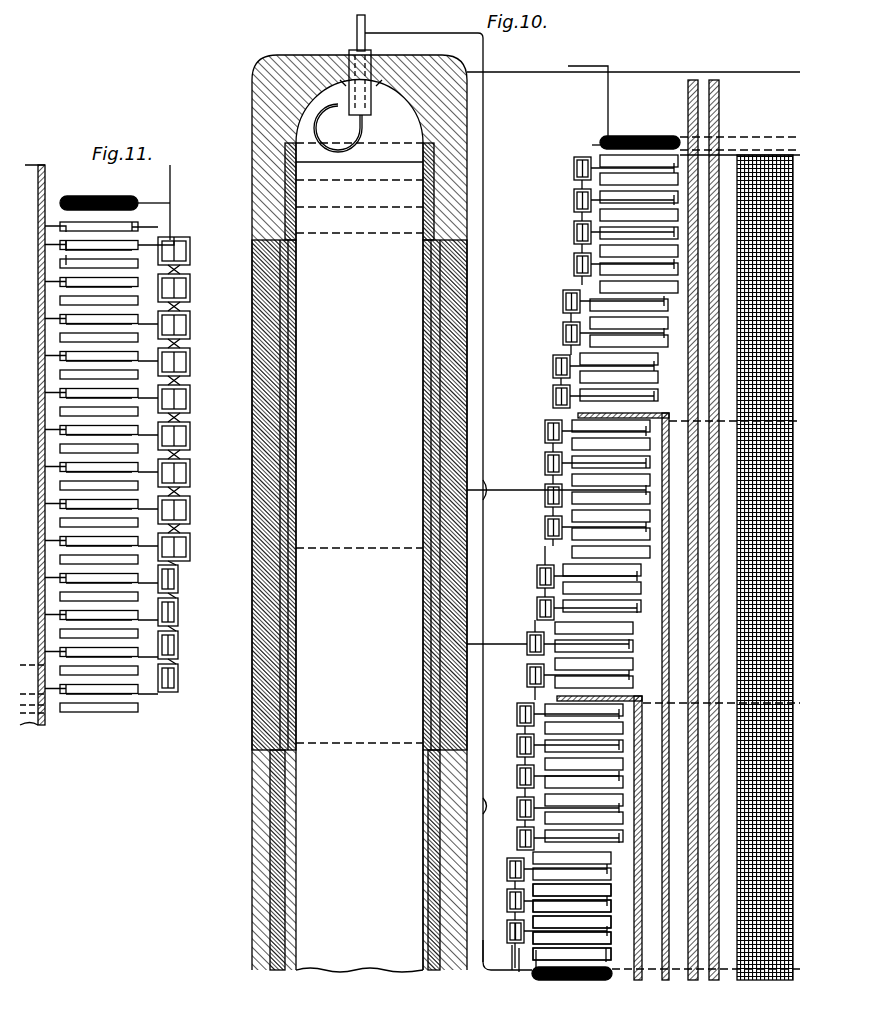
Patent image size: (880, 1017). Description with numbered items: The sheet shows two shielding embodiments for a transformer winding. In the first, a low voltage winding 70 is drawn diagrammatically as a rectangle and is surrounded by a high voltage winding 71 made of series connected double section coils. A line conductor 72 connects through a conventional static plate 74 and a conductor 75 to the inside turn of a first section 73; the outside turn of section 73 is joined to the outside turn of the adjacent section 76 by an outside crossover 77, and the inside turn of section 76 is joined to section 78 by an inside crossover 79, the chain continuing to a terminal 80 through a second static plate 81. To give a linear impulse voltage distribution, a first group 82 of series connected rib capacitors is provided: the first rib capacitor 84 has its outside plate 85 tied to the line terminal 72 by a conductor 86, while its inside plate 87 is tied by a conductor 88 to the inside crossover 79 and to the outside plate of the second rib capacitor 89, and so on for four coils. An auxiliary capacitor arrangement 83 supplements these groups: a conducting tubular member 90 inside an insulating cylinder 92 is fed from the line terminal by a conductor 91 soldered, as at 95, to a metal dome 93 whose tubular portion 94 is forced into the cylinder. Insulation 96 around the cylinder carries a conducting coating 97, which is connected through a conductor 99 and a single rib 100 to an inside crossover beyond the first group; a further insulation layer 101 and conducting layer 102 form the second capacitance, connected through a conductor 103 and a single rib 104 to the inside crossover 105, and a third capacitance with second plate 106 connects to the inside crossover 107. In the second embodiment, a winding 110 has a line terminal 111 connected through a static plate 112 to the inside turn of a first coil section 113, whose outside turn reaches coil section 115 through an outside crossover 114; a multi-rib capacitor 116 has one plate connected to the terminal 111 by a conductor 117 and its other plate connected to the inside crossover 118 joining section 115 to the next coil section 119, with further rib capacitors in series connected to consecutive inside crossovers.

In FIG. 10, the low voltage winding 70 is at (770, 462).
In FIG. 10, the high voltage winding 71 is at (620, 137).
In FIG. 10, the line conductor 72 is at (494, 975).
In FIG. 10, the first section 73 is at (607, 958).
In FIG. 10, the static plate 74 is at (594, 982).
In FIG. 10, the conductor 75 is at (606, 962).
In FIG. 10, the adjacent section 76 is at (607, 941).
In FIG. 10, the outside crossover 77 is at (536, 962).
In FIG. 10, the section 78 is at (609, 912).
In FIG. 10, the inside crossover 79 is at (611, 925).
In FIG. 10, the terminal 80 is at (608, 96).
In FIG. 10, the static plate 81 is at (655, 137).
In FIG. 10, the first group of rib capacitors 82 is at (507, 904).
In FIG. 10, the auxiliary capacitor arrangement 83 is at (362, 837).
In FIG. 10, the first rib capacitor 84 is at (507, 926).
In FIG. 10, the outside plate 85 is at (512, 938).
In FIG. 10, the conductor 86 is at (512, 963).
In FIG. 10, the inside plate 87 is at (518, 968).
In FIG. 10, the conductor 88 is at (565, 936).
In FIG. 10, the second rib capacitor 89 is at (508, 882).
In FIG. 10, the tubular member 90 is at (424, 936).
In FIG. 10, the conductor 91 is at (358, 33).
In FIG. 10, the insulating cylinder 92 is at (256, 88).
In FIG. 10, the metal dome 93 is at (378, 85).
In FIG. 10, the tubular portion 94 is at (290, 135).
In FIG. 10, the soldering 95 is at (326, 92).
In FIG. 10, the insulation 96 is at (290, 634).
In FIG. 10, the conducting coating 97 is at (292, 677).
In FIG. 10, the conductor 99 is at (500, 803).
In FIG. 10, the single rib 100 is at (517, 812).
In FIG. 10, the layer of insulation 101 is at (294, 704).
In FIG. 10, the conducting layer 102 is at (272, 586).
In FIG. 10, the conductor 103 is at (503, 643).
In FIG. 10, the single rib 104 is at (527, 652).
In FIG. 10, the inside crossover 105 is at (253, 432).
In FIG. 10, the second plate 106 is at (467, 418).
In FIG. 10, the inside crossover 107 is at (615, 696).
In FIG. 11, the winding 110 is at (56, 462).
In FIG. 11, the line terminal 111 is at (172, 190).
In FIG. 11, the static plate 112 is at (92, 196).
In FIG. 11, the first coil section 113 is at (68, 225).
In FIG. 11, the outside crossover 114 is at (132, 237).
In FIG. 11, the coil section 115 is at (66, 246).
In FIG. 11, the rib capacitor 116 is at (191, 252).
In FIG. 11, the conductor 117 is at (174, 220).
In FIG. 11, the inside crossover 118 is at (66, 258).
In FIG. 11, the coil section 119 is at (64, 271).